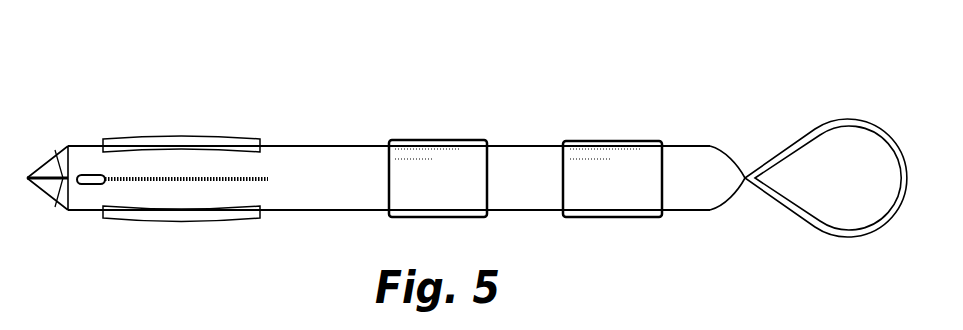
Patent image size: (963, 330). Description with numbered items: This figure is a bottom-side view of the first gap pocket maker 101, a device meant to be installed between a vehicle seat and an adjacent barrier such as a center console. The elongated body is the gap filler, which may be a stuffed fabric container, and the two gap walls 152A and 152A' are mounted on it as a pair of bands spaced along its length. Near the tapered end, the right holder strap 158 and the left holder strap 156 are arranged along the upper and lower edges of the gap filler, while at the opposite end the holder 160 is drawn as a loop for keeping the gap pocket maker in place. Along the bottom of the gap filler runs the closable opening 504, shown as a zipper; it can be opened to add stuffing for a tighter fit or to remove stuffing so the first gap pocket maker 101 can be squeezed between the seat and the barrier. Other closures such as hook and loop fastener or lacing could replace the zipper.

The first gap pocket maker 101 is at (201, 76).
The right holder strap 158 is at (175, 137).
The left holder strap 156 is at (175, 222).
The closable opening 504 is at (230, 180).
The gap wall 152A' is at (440, 136).
The gap wall 152A is at (612, 136).
The holder 160 is at (829, 109).